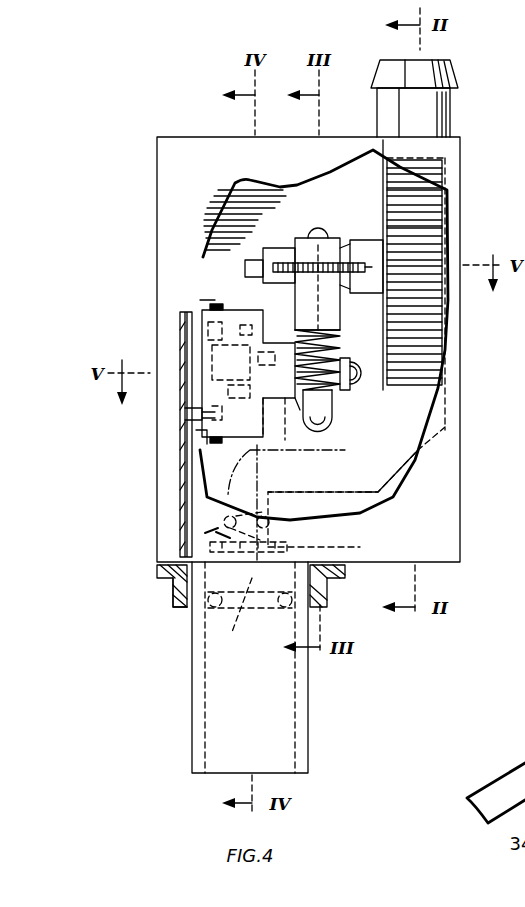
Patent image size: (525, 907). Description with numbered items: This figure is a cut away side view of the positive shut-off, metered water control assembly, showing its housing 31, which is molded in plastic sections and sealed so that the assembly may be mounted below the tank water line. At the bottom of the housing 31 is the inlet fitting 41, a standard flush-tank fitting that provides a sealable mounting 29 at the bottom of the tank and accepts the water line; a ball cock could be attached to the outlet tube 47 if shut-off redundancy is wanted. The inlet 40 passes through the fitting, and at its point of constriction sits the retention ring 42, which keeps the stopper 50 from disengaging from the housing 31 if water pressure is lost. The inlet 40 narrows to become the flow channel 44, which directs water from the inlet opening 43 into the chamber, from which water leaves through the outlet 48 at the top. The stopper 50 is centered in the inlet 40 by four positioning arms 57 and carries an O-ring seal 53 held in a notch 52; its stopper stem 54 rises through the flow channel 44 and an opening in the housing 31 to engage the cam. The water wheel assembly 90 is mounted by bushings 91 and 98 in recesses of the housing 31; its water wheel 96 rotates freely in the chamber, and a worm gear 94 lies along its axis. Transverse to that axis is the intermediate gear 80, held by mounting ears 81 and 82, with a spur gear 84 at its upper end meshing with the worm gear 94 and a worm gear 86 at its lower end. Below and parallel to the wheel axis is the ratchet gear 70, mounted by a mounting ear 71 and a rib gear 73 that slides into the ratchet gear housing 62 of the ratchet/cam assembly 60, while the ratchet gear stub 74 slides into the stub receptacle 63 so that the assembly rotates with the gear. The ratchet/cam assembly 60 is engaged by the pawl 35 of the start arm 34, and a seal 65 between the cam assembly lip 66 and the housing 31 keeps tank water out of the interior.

The housing 31 is at (197, 137).
The outlet tube 47 is at (452, 105).
The outlet 48 is at (433, 60).
The water wheel assembly 90 is at (373, 232).
The water wheel 96 is at (433, 237).
The bushing 98 is at (447, 277).
The flow channel 44 is at (440, 402).
The mounting ear 81 is at (318, 230).
The worm gear 94 is at (351, 238).
The spur gear 84 is at (295, 262).
The bushing 91 is at (260, 262).
The worm gear 86 is at (297, 335).
The intermediate gear 80 is at (338, 316).
The mounting ear 71 is at (357, 384).
The mounting ear 82 is at (333, 414).
The ratchet/cam assembly 60 is at (241, 302).
The seal 65 is at (207, 303).
The ratchet gear housing 62 is at (193, 333).
The ratchet gear stub 74 is at (203, 357).
The stub receptacle 63 is at (210, 373).
The pawl 35 is at (193, 415).
The cam assembly lip 66 is at (207, 438).
The rib gear 73 is at (268, 397).
The ratchet gear 70 is at (285, 407).
The start arm 34 is at (185, 468).
The stopper stem 54 is at (252, 485).
The inlet opening 43 is at (290, 517).
The O-ring seal 53 is at (223, 520).
The notch 52 is at (220, 537).
The positioning arms 57 is at (293, 547).
The stopper 50 is at (157, 565).
The sealable mounting 29 is at (173, 580).
The retention ring 42 is at (330, 603).
The inlet fitting 41 is at (192, 657).
The inlet 40 is at (250, 618).